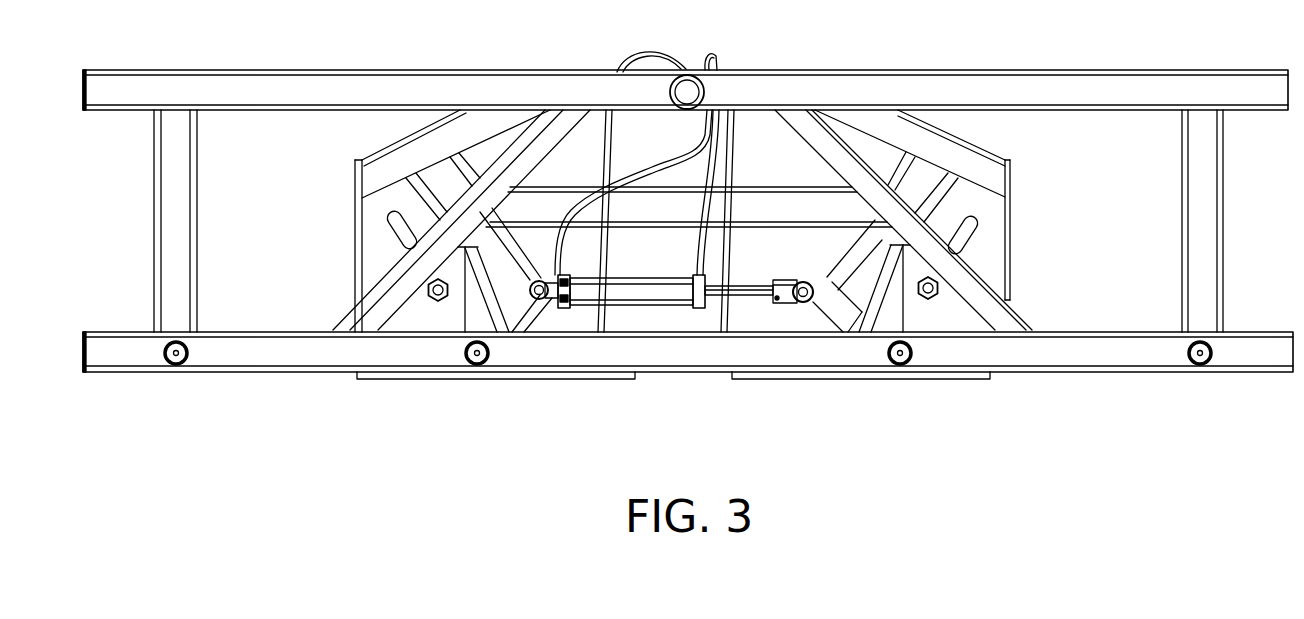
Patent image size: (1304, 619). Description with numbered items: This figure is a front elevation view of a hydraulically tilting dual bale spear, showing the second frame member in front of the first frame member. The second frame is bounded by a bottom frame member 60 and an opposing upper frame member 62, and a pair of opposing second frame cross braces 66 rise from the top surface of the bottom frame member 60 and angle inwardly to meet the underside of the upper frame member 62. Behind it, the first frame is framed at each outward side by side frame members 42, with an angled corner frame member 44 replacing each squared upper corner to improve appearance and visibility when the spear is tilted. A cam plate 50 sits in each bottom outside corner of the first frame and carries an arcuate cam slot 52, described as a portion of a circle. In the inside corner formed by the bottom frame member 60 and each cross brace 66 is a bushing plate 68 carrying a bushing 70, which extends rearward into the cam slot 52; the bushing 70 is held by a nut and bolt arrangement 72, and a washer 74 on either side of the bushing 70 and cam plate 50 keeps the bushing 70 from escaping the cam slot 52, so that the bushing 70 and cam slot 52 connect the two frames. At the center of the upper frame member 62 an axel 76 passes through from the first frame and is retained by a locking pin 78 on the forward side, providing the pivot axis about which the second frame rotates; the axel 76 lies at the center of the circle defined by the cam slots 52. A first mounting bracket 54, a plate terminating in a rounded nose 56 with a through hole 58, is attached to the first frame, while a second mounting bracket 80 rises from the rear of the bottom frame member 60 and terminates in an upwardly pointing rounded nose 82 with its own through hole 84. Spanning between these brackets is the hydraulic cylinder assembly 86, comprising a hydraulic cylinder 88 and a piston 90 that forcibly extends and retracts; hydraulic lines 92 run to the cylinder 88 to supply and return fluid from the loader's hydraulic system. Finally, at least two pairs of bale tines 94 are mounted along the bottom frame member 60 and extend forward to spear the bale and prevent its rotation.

The side frame members 42 is at (1012, 216).
The corner frame member 44 is at (977, 142).
The cam plate 50 is at (987, 262).
The cam slot 52 is at (977, 236).
The first mounting bracket 54 is at (827, 307).
The rounded nose 56 is at (796, 280).
The through hole 58 is at (812, 283).
The bottom frame member 60 is at (1095, 372).
The upper frame member 62 is at (1031, 70).
The second frame cross braces 66 is at (1023, 314).
The bushing plate 68 is at (487, 305).
The bushing 70 is at (677, 349).
The washer 72 is at (677, 349).
The washer 74 is at (430, 302).
The axel 76 is at (671, 79).
The locking pin 78 is at (690, 68).
The second mounting bracket 80 is at (530, 320).
The rounded nose 82 is at (540, 279).
The through hole 84 is at (547, 312).
The hydraulic cylinder assembly 86 is at (665, 329).
The hydraulic cylinder 88 is at (640, 306).
The piston 90 is at (747, 300).
The hydraulic lines 92 is at (656, 172).
The bale tines 94 is at (185, 362).